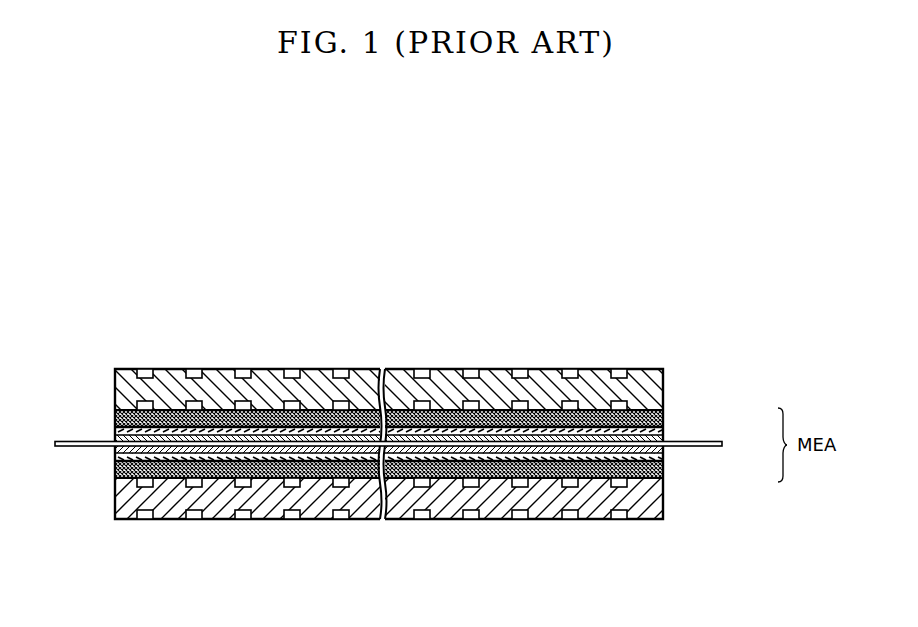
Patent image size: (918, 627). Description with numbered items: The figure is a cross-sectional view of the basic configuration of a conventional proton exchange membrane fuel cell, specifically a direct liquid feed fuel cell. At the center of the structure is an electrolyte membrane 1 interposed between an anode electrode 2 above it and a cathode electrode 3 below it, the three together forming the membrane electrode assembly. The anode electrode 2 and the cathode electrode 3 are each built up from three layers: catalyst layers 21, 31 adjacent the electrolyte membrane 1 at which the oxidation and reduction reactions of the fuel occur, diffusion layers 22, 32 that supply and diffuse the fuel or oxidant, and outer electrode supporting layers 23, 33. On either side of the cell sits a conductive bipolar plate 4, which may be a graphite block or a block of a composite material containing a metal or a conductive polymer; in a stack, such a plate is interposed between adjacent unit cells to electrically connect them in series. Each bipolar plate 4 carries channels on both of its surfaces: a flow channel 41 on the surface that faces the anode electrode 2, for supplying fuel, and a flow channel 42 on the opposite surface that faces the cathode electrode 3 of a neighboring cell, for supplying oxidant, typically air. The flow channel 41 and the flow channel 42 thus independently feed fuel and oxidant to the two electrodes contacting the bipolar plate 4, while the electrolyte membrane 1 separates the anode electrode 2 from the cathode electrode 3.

The electrolyte membrane 1 is at (722, 444).
The anode electrode 2 is at (431, 410).
The catalyst layer 21 is at (416, 430).
The diffusion layer 22 is at (664, 426).
The electrode supporting layer 23 is at (664, 410).
The cathode electrode 3 is at (431, 479).
The catalyst layer 31 is at (664, 451).
The diffusion layer 32 is at (664, 462).
The electrode supporting layer 33 is at (664, 474).
The bipolar plate 4 is at (664, 388).
The flow channel 41 is at (196, 405).
The flow channel 42 is at (147, 374).